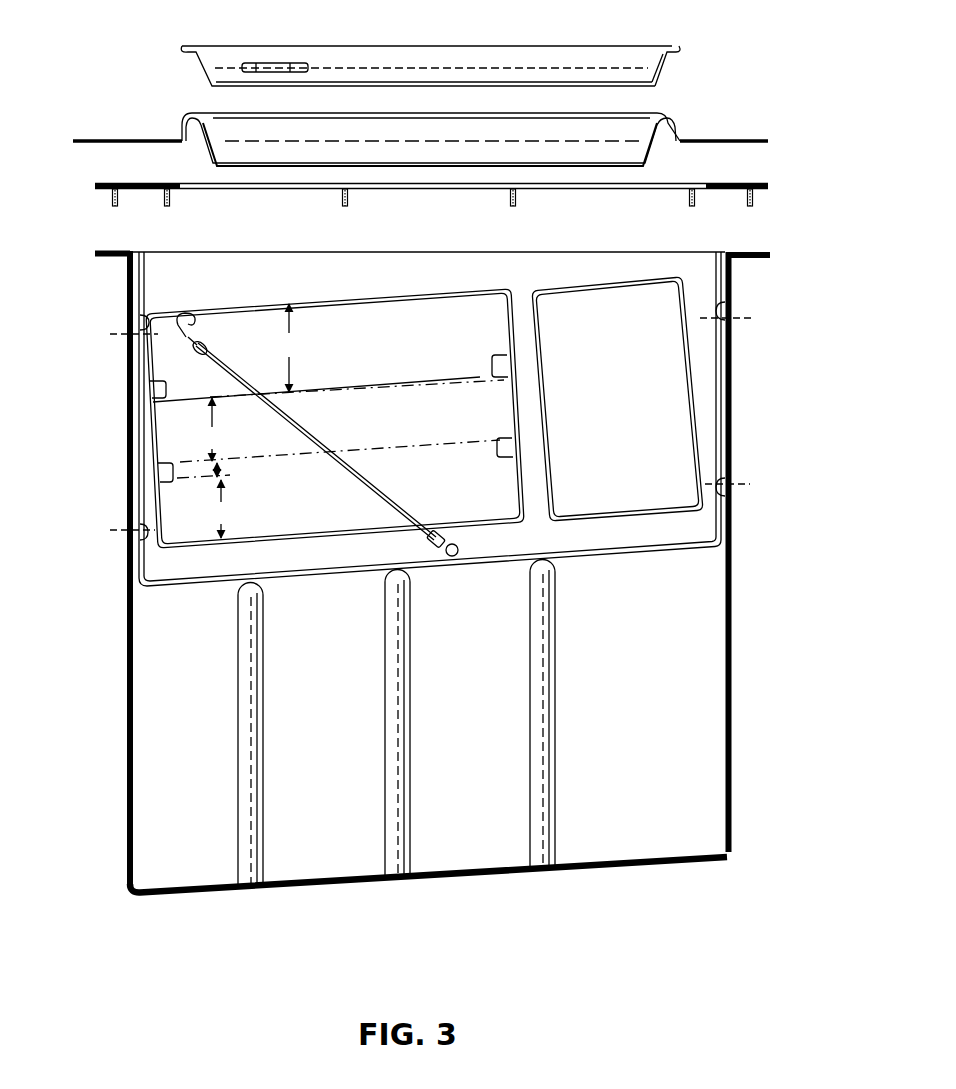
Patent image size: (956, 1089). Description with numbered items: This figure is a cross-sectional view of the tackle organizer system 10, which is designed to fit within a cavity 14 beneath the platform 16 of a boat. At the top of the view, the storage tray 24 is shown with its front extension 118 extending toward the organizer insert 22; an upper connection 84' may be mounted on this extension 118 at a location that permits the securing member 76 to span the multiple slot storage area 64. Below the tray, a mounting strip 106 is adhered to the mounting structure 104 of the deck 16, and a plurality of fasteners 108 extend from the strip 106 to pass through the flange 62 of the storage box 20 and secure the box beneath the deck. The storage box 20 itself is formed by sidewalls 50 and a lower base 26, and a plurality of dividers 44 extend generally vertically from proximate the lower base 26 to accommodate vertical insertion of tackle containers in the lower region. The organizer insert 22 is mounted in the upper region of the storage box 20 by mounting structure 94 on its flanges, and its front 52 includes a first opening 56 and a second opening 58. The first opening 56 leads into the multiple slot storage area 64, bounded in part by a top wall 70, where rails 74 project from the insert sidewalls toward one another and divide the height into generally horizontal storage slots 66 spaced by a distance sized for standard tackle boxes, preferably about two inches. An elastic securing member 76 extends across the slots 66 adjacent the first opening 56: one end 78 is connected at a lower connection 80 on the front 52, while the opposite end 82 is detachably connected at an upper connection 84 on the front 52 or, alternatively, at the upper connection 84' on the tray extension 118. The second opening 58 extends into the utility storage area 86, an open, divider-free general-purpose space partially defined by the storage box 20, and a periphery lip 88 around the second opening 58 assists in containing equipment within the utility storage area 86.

The tackle organizer system 10 is at (133, 968).
The cavity 14 is at (71, 672).
The platform 16 is at (726, 140).
The storage box 20 is at (104, 853).
The organizer insert 22 is at (706, 530).
The storage tray 24 is at (630, 43).
The lower base 26 is at (483, 878).
The dividers 44 is at (241, 709).
The sidewalls 50 is at (727, 459).
The front 52 is at (563, 541).
The first opening 56 is at (249, 306).
The second opening 58 is at (697, 421).
The flange 62 is at (105, 251).
The multiple slot storage area 64 is at (448, 372).
The storage slots 66 is at (406, 332).
The top wall 70 is at (341, 296).
The rails 74 is at (167, 390).
The securing member 76 is at (357, 476).
The end 78 is at (430, 545).
The lower connection 80 is at (458, 556).
The opposite end 82 is at (197, 348).
The upper connection 84 is at (173, 307).
The upper connection 84' is at (275, 43).
The utility storage area 86 is at (624, 374).
The periphery lip 88 is at (692, 376).
The mounting structure 94 is at (141, 324).
The mounting structure 104 is at (668, 116).
The mounting strip 106 is at (722, 183).
The fasteners 108 is at (172, 202).
The front extension 118 is at (653, 77).